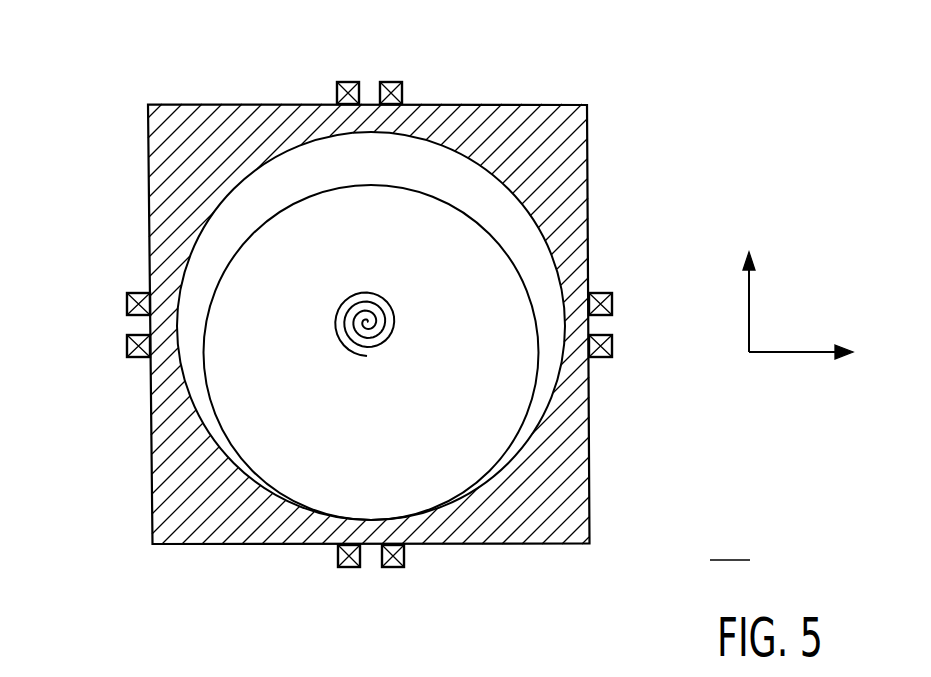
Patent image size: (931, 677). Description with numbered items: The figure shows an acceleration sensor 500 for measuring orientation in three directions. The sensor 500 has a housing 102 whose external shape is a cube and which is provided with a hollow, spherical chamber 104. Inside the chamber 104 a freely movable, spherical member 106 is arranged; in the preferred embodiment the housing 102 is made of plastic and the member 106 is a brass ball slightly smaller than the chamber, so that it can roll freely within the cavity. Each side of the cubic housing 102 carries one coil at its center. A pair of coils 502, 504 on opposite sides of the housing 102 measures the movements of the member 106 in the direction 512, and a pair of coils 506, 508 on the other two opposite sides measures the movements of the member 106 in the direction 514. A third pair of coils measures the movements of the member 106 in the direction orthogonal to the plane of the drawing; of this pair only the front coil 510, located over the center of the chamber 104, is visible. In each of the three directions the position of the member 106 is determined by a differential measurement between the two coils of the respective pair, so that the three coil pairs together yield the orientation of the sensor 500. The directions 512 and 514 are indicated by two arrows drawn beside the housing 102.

The housing 102 is at (575, 512).
The spherical chamber 104 is at (510, 218).
The spherical member 106 is at (508, 392).
The sensor 500 is at (730, 547).
The coil 502 is at (127, 303).
The coil 504 is at (612, 303).
The coil 506 is at (349, 568).
The coil 508 is at (346, 80).
The front coil 510 is at (384, 348).
The direction 512 is at (774, 354).
The direction 514 is at (750, 297).